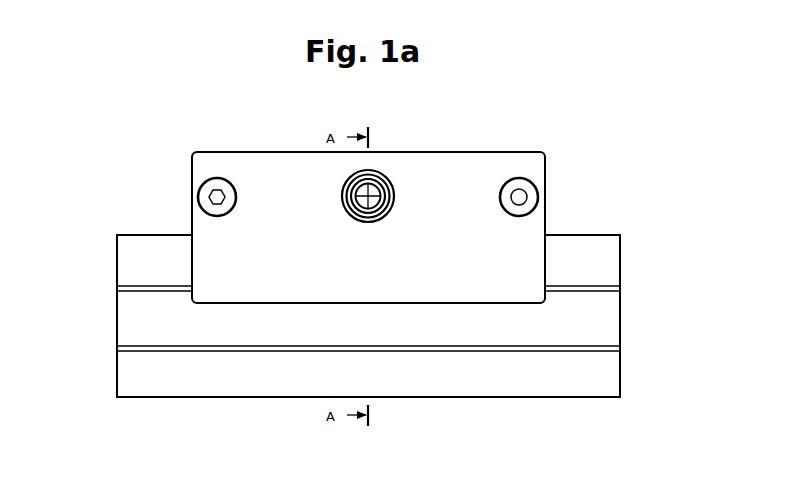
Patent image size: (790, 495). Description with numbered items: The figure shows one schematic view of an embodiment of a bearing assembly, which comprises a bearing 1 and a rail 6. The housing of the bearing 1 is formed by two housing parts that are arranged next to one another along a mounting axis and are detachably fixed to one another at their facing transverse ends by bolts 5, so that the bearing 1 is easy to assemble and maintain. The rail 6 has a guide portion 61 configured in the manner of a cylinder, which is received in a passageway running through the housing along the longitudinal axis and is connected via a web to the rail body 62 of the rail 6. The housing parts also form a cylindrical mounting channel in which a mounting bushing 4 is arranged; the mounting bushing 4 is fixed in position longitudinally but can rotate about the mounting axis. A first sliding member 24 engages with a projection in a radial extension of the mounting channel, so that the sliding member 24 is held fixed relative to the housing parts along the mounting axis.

The bearing 1 is at (452, 170).
The mounting bushing 4 is at (340, 162).
The bolts 5 is at (204, 190).
The rail 6 is at (360, 316).
The first sliding member 24 is at (349, 181).
The guide portion 61 is at (606, 259).
The rail body 62 is at (602, 322).